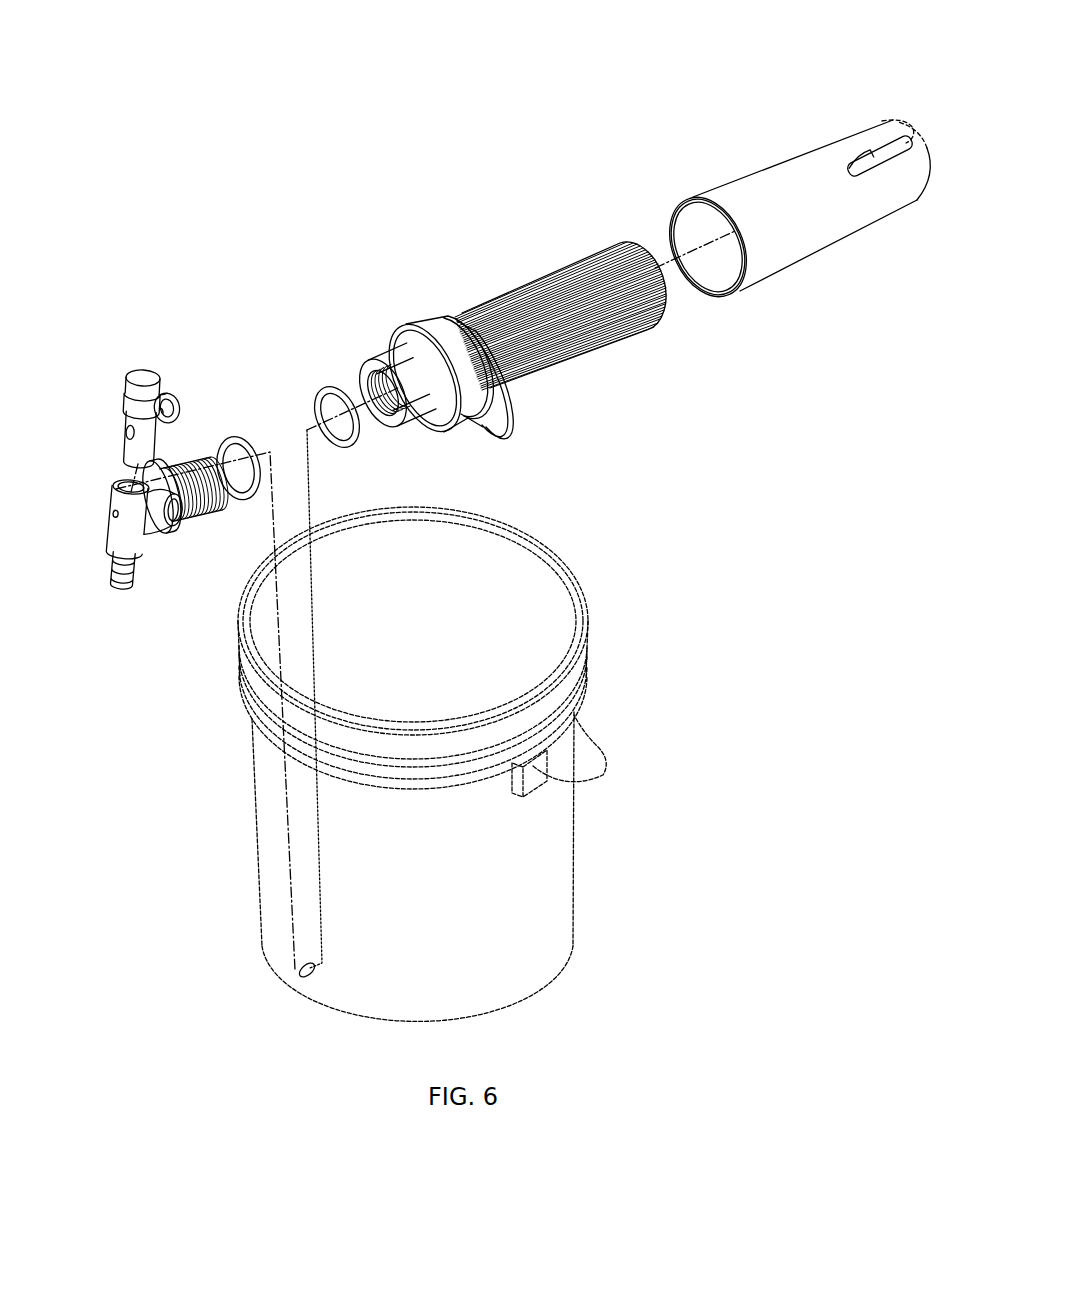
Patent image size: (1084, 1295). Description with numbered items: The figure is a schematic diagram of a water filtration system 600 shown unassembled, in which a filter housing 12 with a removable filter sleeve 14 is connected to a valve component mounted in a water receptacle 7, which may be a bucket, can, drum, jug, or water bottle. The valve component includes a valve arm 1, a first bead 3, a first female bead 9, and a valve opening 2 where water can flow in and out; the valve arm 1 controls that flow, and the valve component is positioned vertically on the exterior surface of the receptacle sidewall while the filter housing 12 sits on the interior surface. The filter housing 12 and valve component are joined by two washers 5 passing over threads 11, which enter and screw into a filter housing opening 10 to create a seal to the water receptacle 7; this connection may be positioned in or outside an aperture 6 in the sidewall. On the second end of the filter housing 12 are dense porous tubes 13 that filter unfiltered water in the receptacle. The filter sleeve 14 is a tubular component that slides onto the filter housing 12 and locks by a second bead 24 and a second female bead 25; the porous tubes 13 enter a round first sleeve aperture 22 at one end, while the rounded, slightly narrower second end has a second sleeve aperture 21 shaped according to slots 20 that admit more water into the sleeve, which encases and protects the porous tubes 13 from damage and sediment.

The water filtration system 600 is at (253, 243).
The valve arm 1 is at (140, 365).
The valve opening 2 is at (125, 432).
The first bead 3 is at (118, 405).
The first female bead 9 is at (120, 485).
The threads 11 is at (210, 510).
The washers 5 is at (230, 437).
The filter housing opening 10 is at (393, 413).
The filter housing 12 is at (435, 327).
The second bead 24 is at (485, 397).
The porous tubes 13 is at (542, 262).
The filter sleeve 14 is at (791, 186).
The second sleeve aperture 21 is at (929, 137).
The slots 20 is at (880, 147).
The first sleeve aperture 22 is at (717, 257).
The second female bead 25 is at (710, 290).
The water receptacle 7 is at (257, 915).
The aperture 6 is at (300, 967).